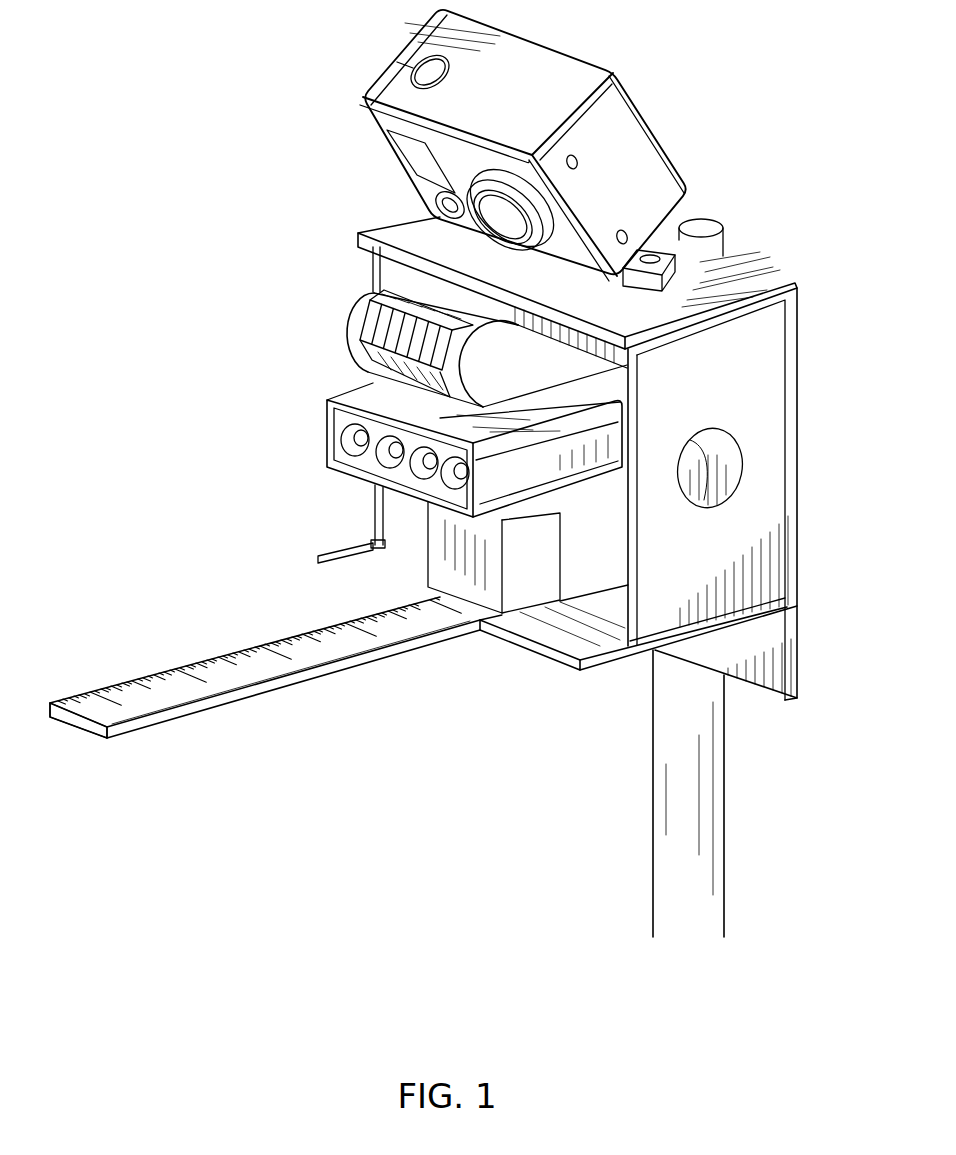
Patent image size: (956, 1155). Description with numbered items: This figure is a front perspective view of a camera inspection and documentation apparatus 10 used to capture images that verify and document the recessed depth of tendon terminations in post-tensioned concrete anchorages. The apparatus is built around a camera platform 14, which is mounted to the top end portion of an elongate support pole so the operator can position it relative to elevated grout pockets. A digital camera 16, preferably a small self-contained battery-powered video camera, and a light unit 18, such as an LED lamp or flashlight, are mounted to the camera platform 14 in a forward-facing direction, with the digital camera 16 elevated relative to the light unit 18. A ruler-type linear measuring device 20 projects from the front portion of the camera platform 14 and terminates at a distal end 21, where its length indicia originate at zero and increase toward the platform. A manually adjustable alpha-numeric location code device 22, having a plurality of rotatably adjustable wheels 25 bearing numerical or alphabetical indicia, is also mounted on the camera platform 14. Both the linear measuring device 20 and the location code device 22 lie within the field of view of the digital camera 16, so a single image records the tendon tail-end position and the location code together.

The camera inspection and documentation apparatus 10 is at (306, 98).
The camera platform 14 is at (752, 277).
The digital camera 16 is at (650, 128).
The light unit 18 is at (326, 437).
The linear measuring device 20 is at (342, 620).
The distal end 21 is at (93, 728).
The alpha-numeric location code device 22 is at (352, 301).
The rotatably adjustable wheels 25 is at (366, 352).